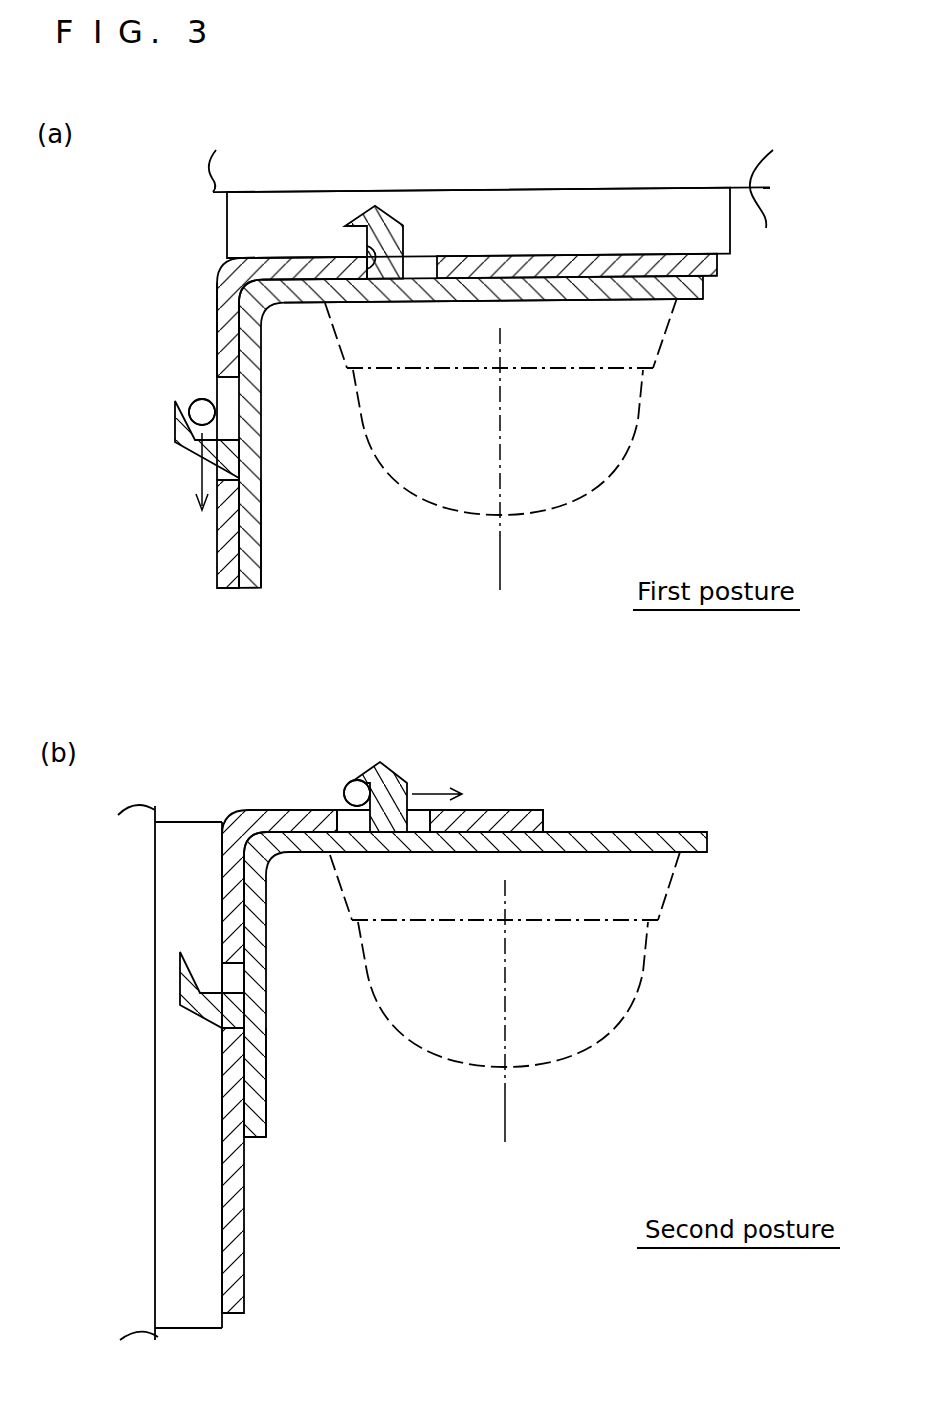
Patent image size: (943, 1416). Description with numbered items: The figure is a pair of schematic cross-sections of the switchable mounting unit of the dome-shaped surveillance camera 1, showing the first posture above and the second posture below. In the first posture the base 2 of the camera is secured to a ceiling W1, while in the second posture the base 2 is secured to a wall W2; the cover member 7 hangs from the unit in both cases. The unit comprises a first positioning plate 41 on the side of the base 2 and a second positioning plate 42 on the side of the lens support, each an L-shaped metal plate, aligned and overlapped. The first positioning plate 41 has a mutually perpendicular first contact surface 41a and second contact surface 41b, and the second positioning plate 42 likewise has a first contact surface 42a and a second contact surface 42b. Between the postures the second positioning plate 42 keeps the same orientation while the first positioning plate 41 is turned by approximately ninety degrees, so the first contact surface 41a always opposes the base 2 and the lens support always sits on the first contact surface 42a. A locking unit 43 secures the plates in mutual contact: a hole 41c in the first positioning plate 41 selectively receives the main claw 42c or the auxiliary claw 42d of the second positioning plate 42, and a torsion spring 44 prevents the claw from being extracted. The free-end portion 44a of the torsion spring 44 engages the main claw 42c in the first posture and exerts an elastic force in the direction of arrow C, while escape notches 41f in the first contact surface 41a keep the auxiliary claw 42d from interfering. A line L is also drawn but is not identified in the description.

The surveillance camera 1 is at (733, 418).
The base 2 is at (657, 204).
The cover member 7 is at (630, 427).
The first positioning plate 41 is at (124, 185).
The first contact surface 41a is at (273, 279).
The second contact surface 41b is at (233, 320).
The hole 41c is at (218, 384).
The escape notch 41f is at (367, 246).
The second positioning plate 42 is at (387, 527).
The first contact surface 42a is at (303, 297).
The second contact surface 42b is at (297, 495).
The main claw 42c is at (187, 412).
The auxiliary claw 42d is at (392, 226).
The locking unit 43 is at (88, 347).
The torsion spring 44 is at (188, 398).
The free-end portion 44a is at (190, 397).
The ceiling W1 is at (774, 247).
The wall W2 is at (145, 1190).
The arrow C is at (200, 480).
The optical axis L is at (500, 543).